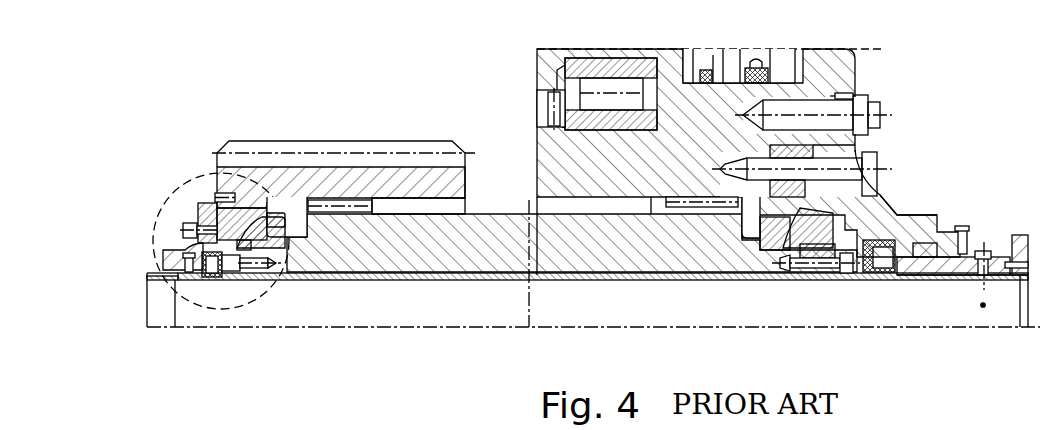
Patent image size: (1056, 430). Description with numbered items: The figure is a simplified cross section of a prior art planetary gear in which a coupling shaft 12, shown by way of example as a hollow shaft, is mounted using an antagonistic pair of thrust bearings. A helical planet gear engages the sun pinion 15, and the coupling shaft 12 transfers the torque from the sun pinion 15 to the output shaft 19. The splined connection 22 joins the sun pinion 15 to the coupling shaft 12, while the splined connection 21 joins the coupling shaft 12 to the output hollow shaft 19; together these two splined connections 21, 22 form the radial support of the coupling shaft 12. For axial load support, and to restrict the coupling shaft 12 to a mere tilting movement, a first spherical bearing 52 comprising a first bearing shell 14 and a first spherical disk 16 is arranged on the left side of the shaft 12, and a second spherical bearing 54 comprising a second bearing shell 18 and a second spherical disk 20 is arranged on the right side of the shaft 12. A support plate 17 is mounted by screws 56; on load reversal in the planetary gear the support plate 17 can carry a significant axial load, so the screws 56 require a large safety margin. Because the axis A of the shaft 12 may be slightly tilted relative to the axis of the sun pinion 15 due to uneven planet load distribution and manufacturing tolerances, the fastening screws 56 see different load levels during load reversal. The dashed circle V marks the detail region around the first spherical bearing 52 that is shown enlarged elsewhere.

The coupling shaft 12 is at (737, 246).
The first bearing shell 14 is at (196, 228).
The sun pinion 15 is at (381, 180).
The first spherical disk 16 is at (265, 255).
The support plate 17 is at (205, 212).
The second bearing shell 18 is at (806, 270).
The output shaft 19 is at (716, 118).
The second spherical disk 20 is at (785, 250).
The splined connection 21 is at (697, 194).
The splined connection 22 is at (338, 205).
The first spherical bearing 52 is at (238, 172).
The second spherical bearing 54 is at (868, 198).
The screws 56 is at (228, 278).
The detail region V is at (165, 300).
The axis A is at (915, 335).